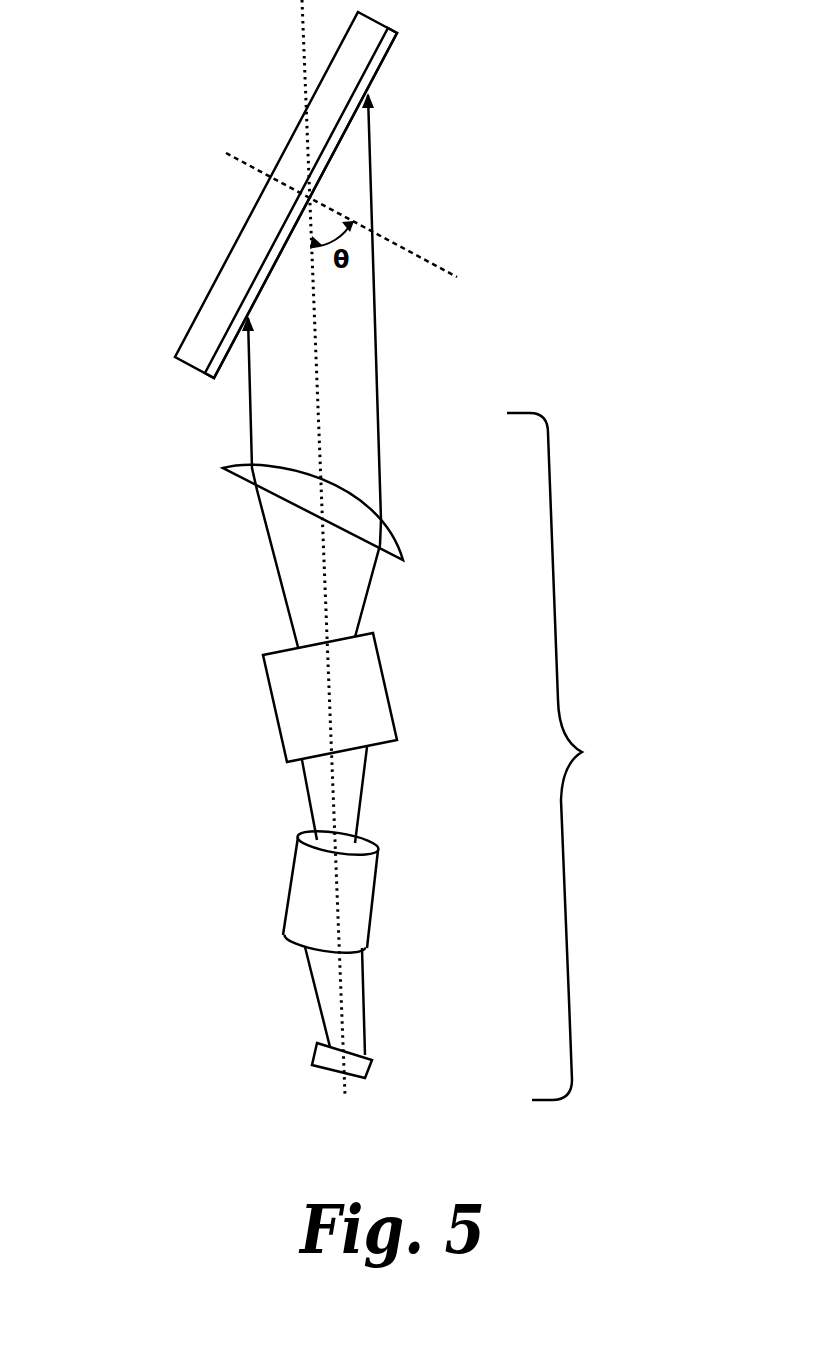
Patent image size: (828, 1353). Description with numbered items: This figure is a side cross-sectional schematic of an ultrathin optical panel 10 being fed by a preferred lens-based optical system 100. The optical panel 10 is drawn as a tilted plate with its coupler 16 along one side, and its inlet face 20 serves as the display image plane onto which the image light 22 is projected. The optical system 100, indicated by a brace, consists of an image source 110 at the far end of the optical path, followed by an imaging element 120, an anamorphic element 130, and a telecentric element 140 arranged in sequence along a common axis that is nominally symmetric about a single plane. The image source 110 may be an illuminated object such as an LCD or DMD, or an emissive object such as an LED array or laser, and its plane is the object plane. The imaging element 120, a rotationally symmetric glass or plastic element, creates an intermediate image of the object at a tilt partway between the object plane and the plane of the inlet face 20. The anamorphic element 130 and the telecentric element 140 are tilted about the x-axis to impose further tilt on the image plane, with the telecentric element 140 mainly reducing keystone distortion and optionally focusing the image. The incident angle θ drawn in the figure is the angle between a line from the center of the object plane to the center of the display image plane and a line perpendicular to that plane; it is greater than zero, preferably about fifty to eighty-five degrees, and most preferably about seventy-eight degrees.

The optical panel 10 is at (192, 308).
The coupler 16 is at (377, 79).
The inlet face 20 is at (337, 143).
The image light 22 is at (345, 777).
The optical system 100 is at (590, 756).
The image source 110 is at (372, 1060).
The imaging element 120 is at (377, 877).
The anamorphic element 130 is at (380, 652).
The telecentric element 140 is at (392, 533).